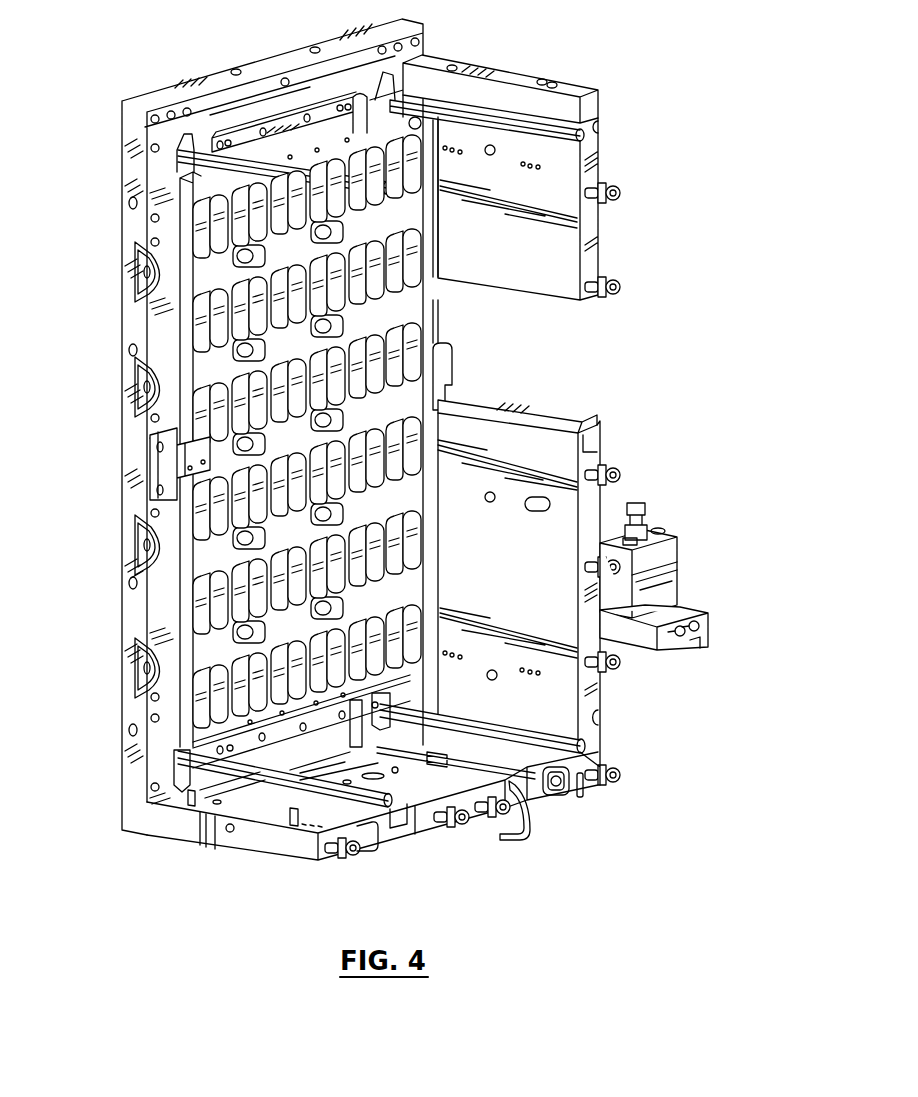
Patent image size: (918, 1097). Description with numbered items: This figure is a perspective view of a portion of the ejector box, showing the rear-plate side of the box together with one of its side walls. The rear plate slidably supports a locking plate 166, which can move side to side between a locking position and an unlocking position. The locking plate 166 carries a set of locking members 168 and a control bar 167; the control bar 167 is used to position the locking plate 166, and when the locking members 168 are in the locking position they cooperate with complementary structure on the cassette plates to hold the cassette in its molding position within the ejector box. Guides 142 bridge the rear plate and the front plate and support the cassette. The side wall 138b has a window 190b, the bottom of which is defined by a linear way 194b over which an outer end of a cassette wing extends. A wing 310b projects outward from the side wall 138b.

The guides 142 is at (478, 108).
The side wall 138b is at (605, 152).
The window 190b is at (626, 318).
The linear way 194b is at (568, 411).
The wing 310b is at (683, 572).
The locking plate 166 is at (175, 297).
The locking members 168 is at (205, 332).
The control bar 167 is at (160, 470).